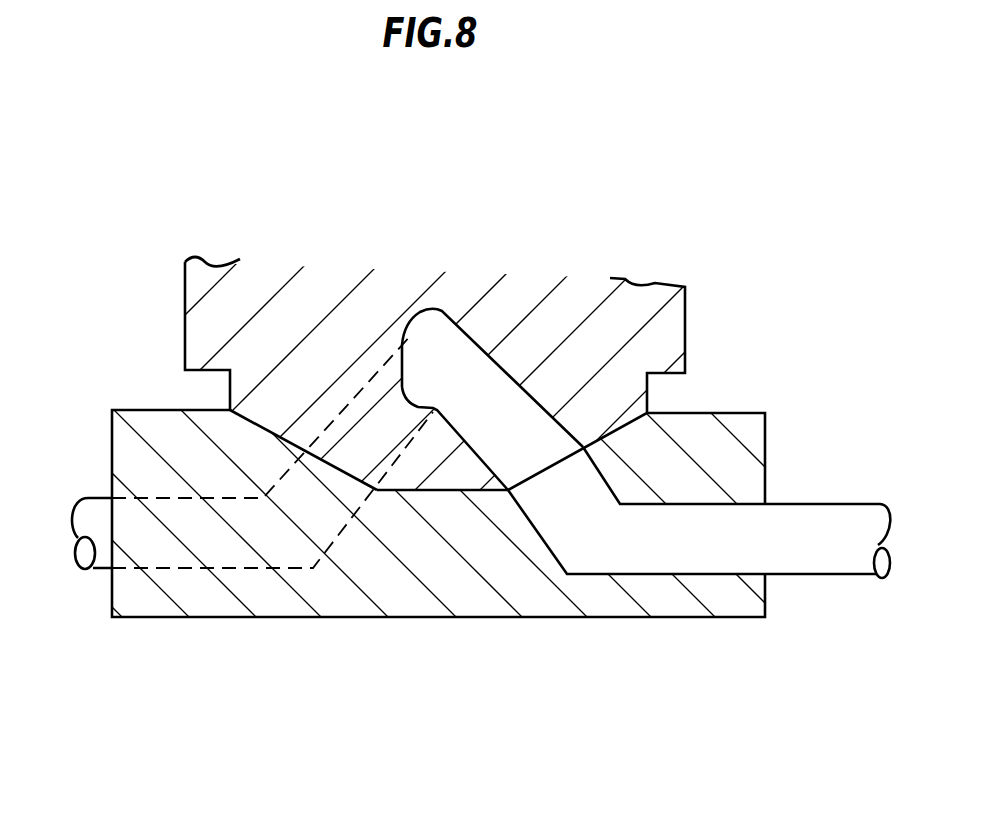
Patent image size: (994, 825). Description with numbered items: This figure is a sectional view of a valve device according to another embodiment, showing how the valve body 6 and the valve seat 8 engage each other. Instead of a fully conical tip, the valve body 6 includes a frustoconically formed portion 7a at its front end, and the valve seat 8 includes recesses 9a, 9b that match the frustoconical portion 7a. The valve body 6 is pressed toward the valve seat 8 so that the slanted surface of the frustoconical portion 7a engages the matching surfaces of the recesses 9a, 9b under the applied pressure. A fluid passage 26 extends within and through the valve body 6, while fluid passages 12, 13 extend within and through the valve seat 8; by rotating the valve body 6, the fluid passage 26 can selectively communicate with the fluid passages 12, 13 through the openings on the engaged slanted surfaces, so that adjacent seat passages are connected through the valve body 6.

The valve body 6 is at (245, 293).
The frustoconically formed portion 7a is at (290, 405).
The valve seat 8 is at (232, 597).
The recess 9a is at (375, 493).
The recess 9b is at (447, 493).
The fluid passage 12 is at (100, 542).
The fluid passage 13 is at (718, 548).
The fluid passage 26 is at (450, 368).